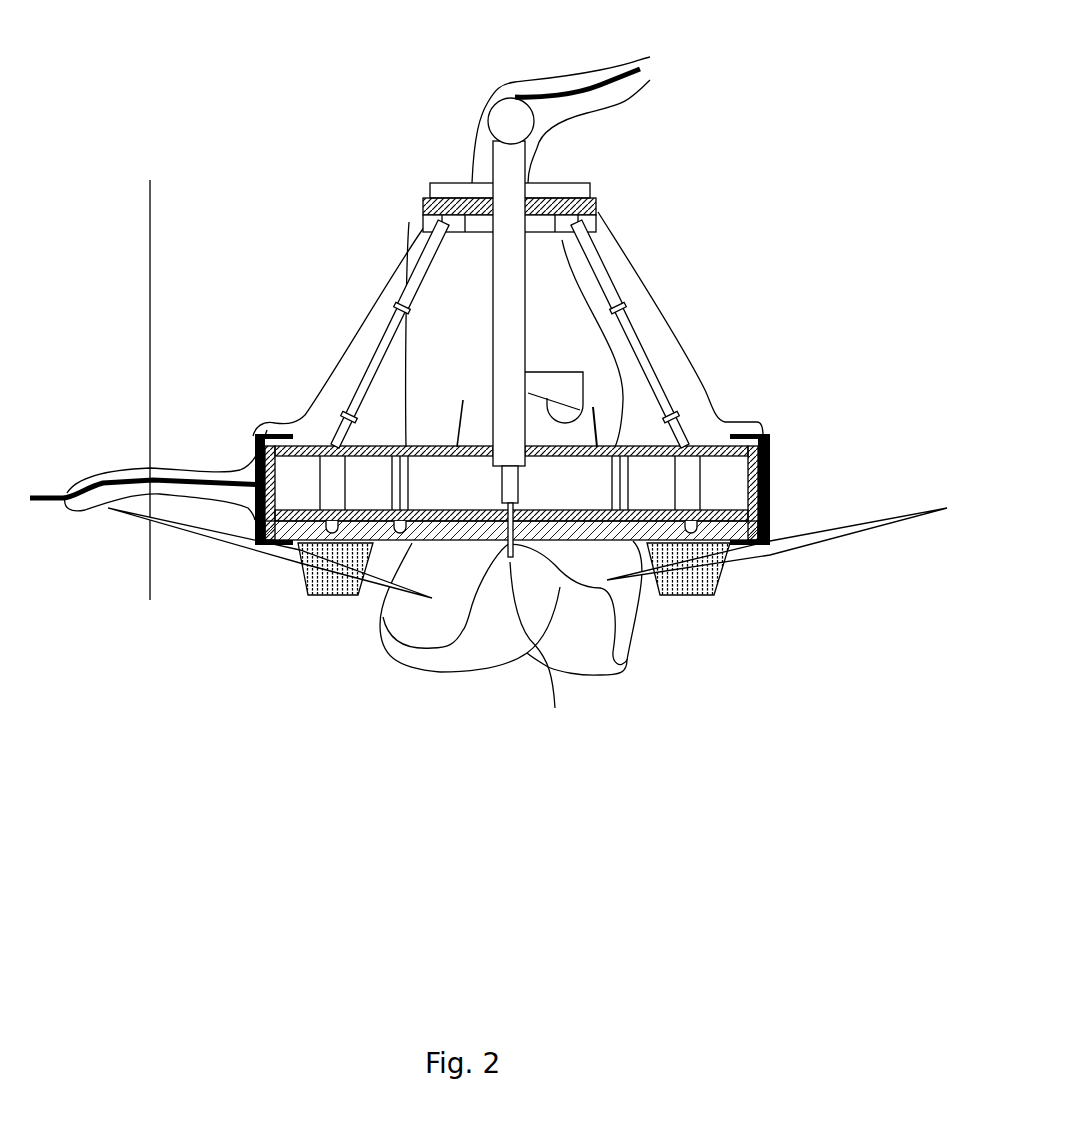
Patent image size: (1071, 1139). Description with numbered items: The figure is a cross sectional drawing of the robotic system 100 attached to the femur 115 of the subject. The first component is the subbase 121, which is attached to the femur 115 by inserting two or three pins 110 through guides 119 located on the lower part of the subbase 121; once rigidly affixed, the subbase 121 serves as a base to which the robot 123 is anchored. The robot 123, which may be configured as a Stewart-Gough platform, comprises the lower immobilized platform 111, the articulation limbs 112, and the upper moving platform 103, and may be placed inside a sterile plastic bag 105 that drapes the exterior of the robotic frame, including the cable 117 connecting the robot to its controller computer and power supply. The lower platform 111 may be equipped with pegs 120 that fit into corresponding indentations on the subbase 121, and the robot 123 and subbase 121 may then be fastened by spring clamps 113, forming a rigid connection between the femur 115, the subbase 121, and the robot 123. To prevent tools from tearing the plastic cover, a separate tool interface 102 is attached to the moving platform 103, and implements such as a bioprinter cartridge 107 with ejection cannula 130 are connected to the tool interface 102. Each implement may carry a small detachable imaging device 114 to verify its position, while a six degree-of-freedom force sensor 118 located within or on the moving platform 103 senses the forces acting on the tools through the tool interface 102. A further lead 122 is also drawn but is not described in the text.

The robotic system 100 is at (299, 120).
The tool interface 102 is at (600, 196).
The upper moving platform 103 is at (427, 217).
The sterile plastic bag 105 is at (531, 448).
The bioprinter cartridge 107 is at (492, 340).
The pins 110 is at (790, 548).
The lower immobilized platform 111 is at (695, 433).
The articulation limbs 112 is at (367, 377).
The spring clamps 113 is at (770, 477).
The detachable imaging device 114 is at (570, 382).
The femur 115 is at (632, 640).
The cable 117 is at (642, 78).
The six degree-of-freedom force sensor 118 is at (590, 218).
The guides 119 is at (305, 573).
The pegs 120 is at (740, 545).
The subbase 121 is at (150, 563).
The cable 122 is at (52, 497).
The robot 123 is at (147, 352).
The ejection cannula 130 is at (543, 657).